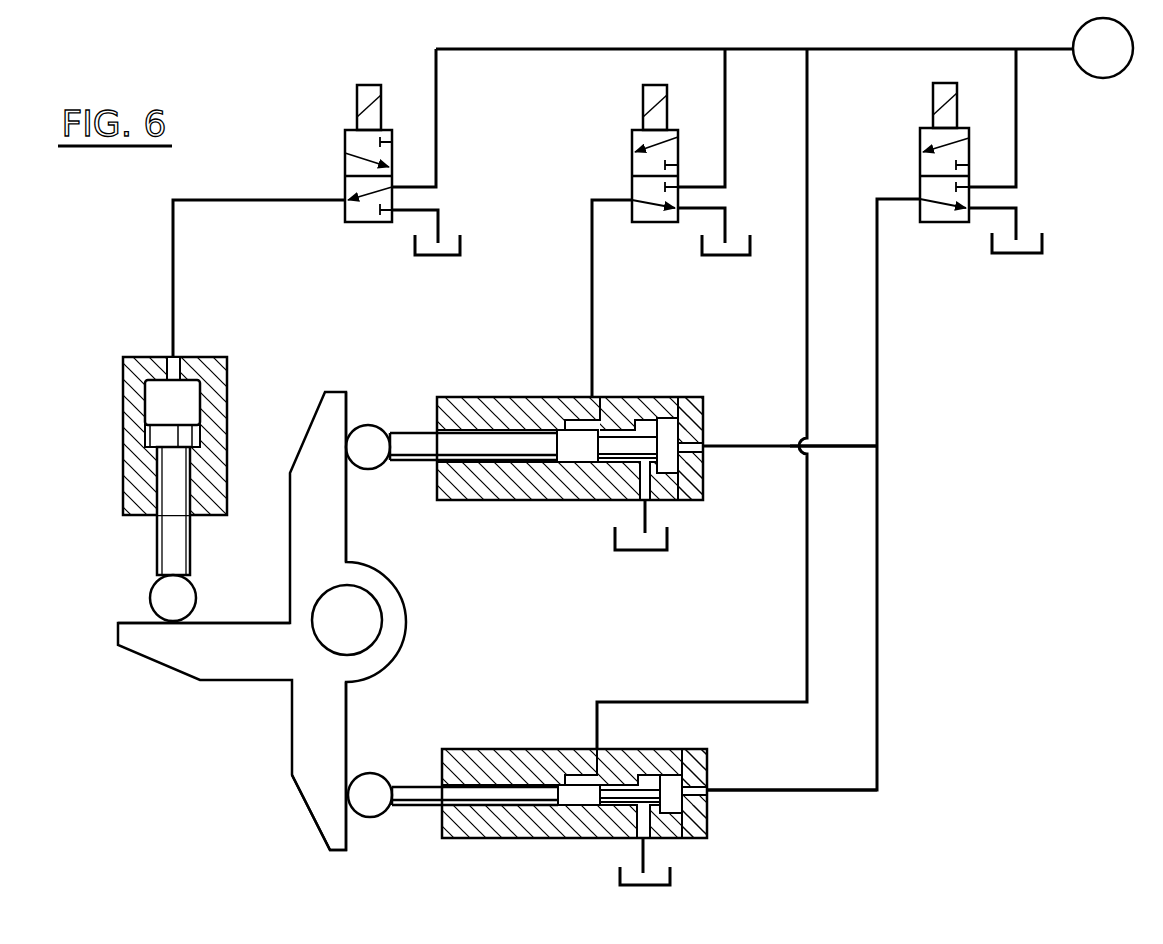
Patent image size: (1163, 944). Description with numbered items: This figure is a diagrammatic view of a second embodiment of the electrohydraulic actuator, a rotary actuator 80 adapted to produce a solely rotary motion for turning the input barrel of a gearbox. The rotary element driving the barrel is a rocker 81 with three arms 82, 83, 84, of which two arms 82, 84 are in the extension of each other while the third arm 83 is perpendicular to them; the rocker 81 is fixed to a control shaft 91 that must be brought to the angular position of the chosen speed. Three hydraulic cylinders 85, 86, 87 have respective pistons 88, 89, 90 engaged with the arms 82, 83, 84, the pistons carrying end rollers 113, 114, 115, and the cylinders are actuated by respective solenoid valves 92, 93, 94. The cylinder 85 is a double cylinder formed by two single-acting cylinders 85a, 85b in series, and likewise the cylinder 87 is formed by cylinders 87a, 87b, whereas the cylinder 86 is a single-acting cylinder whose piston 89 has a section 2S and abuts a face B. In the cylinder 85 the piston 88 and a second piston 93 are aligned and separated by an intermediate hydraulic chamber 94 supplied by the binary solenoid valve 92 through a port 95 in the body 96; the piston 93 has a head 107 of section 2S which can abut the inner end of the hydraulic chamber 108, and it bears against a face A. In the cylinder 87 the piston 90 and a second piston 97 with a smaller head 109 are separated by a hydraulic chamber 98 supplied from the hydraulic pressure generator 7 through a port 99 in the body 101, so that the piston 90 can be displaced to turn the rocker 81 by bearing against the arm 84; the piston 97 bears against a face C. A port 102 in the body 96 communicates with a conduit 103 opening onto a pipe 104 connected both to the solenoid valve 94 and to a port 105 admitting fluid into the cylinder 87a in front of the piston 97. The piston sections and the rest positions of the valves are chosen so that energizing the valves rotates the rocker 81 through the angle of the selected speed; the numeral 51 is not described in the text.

The hydraulic pressure generator 7 is at (1122, 72).
The rotary actuator 80 is at (940, 598).
The rocker 81 is at (281, 621).
The arm 82 is at (346, 516).
The arm 83 is at (243, 622).
The arm 84 is at (298, 795).
The hydraulic cylinder 85 is at (598, 469).
The single-acting cylinder 85a is at (642, 425).
The single-acting cylinder 85b is at (527, 420).
The hydraulic cylinder 86 is at (120, 480).
The hydraulic cylinder 87 is at (599, 796).
The single-acting cylinder 87a is at (712, 748).
The single-acting cylinder 87b is at (570, 745).
The piston 88 is at (420, 440).
The piston 89 is at (155, 535).
The piston 90 is at (395, 818).
The control shaft 91 is at (380, 615).
The solenoid valve 92 is at (627, 150).
The solenoid valve / piston 93 is at (338, 150).
The solenoid valve / intermediate hydraulic chamber 94 is at (950, 228).
The port 95 is at (590, 412).
The body 96 is at (692, 500).
The piston 97 is at (688, 838).
The hydraulic chamber 98 is at (585, 802).
The port 99 is at (606, 762).
The body 101 is at (590, 838).
The port 102 is at (715, 446).
The conduit 103 is at (772, 455).
The pipe 104 is at (878, 426).
The port 105 is at (712, 790).
The head 107 is at (682, 446).
The hydraulic chamber 108 is at (638, 462).
The head 109 is at (678, 780).
The end roller 113 is at (368, 450).
The end bearing roller 114 is at (378, 800).
The end bearing roller 115 is at (172, 600).
The section 2S is at (180, 420).
The piston rod extension 51 is at (558, 802).
The face A is at (590, 452).
The face B is at (195, 435).
The face C is at (636, 775).